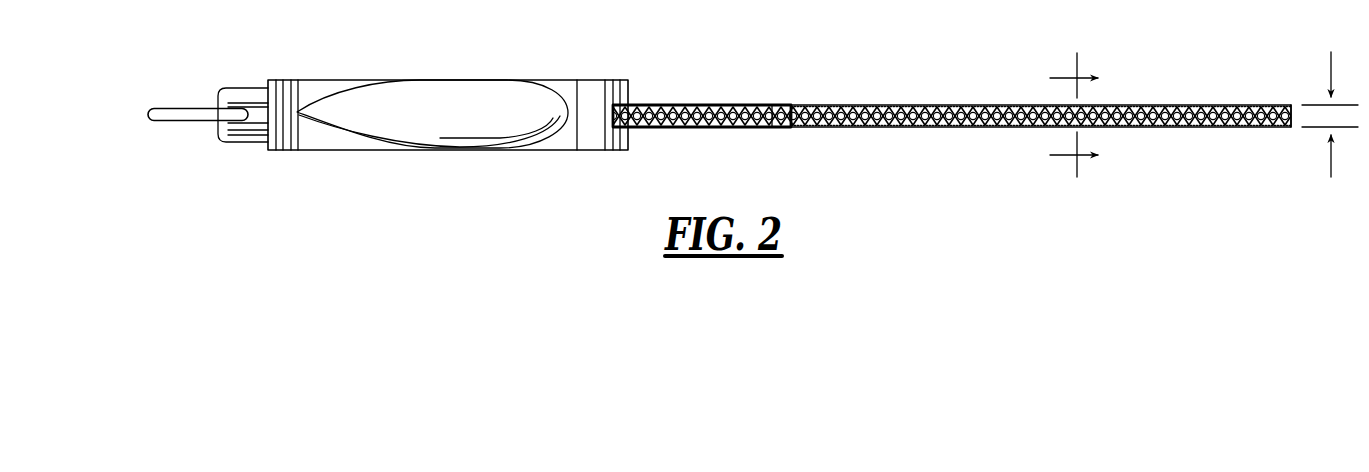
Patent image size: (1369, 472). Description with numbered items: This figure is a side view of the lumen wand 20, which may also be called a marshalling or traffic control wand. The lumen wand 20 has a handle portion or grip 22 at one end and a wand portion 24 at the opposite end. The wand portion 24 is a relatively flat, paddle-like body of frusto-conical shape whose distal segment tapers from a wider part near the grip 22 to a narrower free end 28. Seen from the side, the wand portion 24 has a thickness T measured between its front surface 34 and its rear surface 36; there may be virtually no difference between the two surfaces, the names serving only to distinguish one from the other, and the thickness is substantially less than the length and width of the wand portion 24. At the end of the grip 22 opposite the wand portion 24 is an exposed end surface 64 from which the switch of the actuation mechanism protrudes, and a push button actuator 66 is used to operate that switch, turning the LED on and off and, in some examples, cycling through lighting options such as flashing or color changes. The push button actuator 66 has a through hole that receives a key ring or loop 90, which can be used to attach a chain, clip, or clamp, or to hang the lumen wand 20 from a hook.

The lumen wand 20 is at (1131, 65).
The grip 22 is at (481, 62).
The wand portion 24 is at (1177, 137).
The free end 28 is at (1293, 103).
The front surface 34 is at (963, 103).
The rear surface 36 is at (1003, 130).
The exposed end surface 64 is at (266, 93).
The push button actuator 66 is at (230, 128).
The ring 90 is at (183, 107).